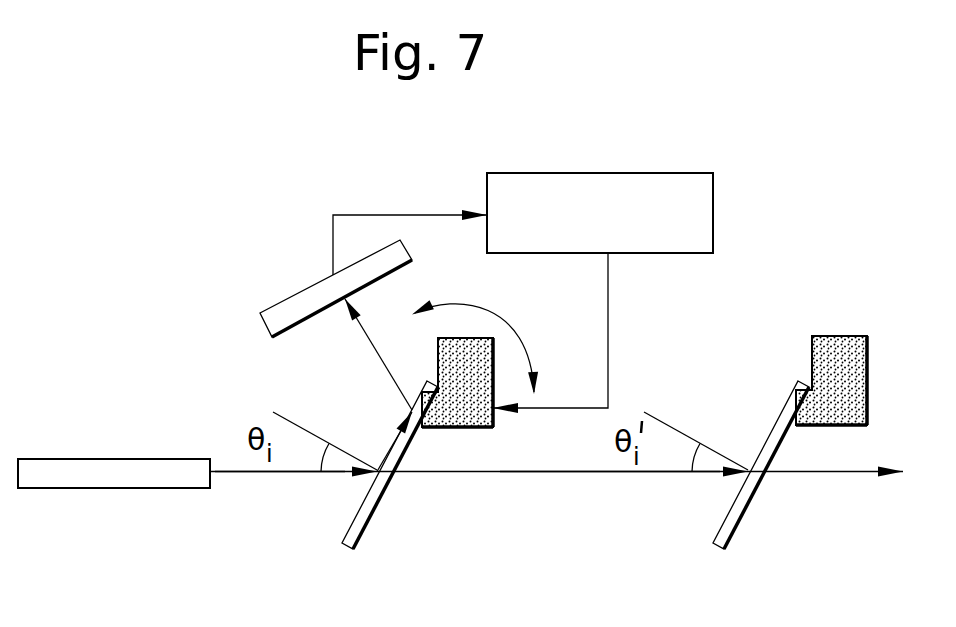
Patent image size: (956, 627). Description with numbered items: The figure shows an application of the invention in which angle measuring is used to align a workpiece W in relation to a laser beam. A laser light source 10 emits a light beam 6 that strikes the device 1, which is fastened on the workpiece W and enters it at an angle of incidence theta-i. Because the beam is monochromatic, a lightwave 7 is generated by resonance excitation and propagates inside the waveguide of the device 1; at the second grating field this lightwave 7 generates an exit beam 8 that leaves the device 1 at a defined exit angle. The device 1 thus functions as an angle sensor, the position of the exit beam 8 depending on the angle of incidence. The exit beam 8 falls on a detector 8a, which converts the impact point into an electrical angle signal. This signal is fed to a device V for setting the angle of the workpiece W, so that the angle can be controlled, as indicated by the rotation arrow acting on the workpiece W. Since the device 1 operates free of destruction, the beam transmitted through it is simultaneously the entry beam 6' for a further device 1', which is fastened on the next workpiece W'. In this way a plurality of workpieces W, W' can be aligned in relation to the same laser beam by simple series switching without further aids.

The device 1 is at (389, 504).
The device 1' is at (759, 504).
The light beam 6 is at (280, 525).
The entry beam 6' is at (610, 523).
The lightwave 7 is at (392, 440).
The exit beam 8 is at (373, 355).
The detector 8a is at (295, 302).
The laser light source 10 is at (118, 481).
The device for setting the angle of the workpiece V is at (600, 213).
The workpiece W is at (457, 442).
The workpiece W' is at (835, 443).